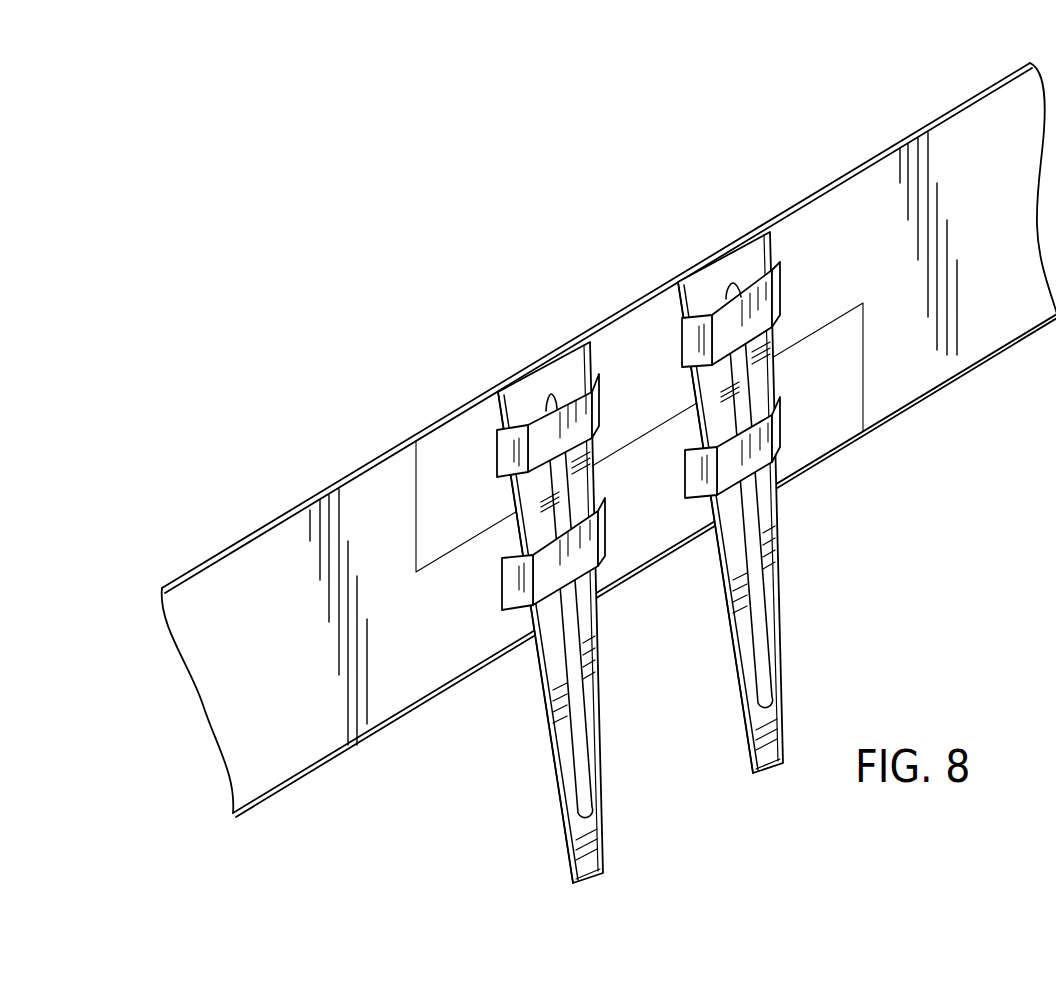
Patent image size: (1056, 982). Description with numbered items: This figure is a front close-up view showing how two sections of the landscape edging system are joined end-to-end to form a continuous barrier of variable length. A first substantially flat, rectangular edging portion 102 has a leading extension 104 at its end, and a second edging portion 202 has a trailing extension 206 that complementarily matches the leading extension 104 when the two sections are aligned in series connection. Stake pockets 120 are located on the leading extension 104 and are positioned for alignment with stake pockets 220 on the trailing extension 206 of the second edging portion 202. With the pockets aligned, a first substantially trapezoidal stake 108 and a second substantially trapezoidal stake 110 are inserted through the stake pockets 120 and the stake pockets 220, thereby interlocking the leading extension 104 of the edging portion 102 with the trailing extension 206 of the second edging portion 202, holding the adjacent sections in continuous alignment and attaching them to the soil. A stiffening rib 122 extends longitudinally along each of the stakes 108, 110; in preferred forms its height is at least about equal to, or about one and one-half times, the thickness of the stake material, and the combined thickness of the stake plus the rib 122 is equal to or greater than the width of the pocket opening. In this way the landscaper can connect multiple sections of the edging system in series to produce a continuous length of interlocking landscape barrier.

The edging portion 102 is at (294, 534).
The second edging portion 202 is at (957, 152).
The trailing extension 206 is at (640, 360).
The leading extension 104 is at (827, 430).
The first stake 108 is at (565, 770).
The second stake 110 is at (758, 720).
The stake pocket 120 is at (528, 607).
The stake pocket 220 is at (512, 437).
The stiffening rib 122 is at (528, 527).